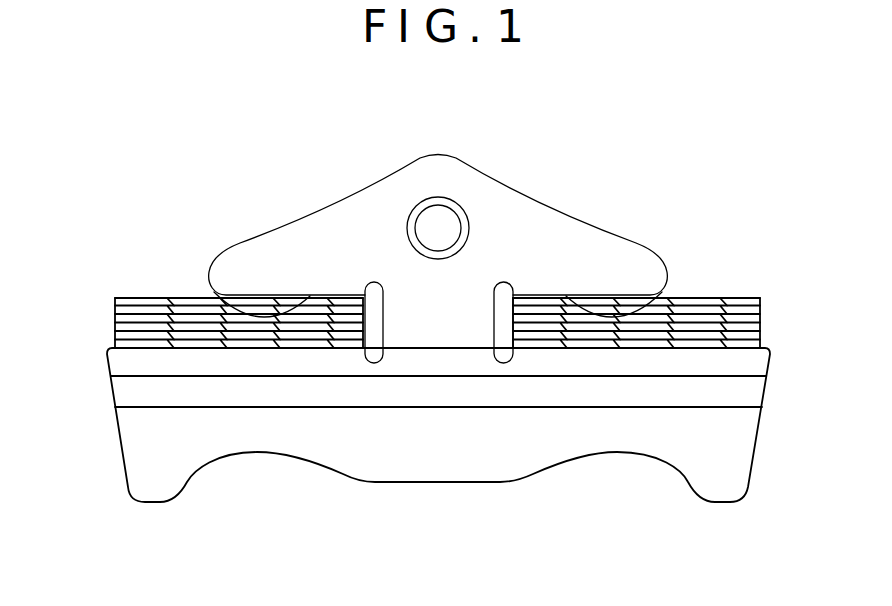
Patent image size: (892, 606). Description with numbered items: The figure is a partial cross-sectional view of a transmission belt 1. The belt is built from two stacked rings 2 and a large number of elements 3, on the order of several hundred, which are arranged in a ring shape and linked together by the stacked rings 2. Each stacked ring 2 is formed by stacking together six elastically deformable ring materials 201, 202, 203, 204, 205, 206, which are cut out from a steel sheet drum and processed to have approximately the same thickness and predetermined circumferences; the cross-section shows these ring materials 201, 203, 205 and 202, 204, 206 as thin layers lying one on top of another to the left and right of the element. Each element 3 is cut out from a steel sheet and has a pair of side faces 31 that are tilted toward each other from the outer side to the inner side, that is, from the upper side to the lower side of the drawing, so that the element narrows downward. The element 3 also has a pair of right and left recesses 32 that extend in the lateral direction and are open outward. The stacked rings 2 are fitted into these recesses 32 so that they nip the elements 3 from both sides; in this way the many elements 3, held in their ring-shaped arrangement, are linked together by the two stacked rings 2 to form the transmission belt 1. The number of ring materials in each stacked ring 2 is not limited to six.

The transmission belt 1 is at (658, 183).
The stacked ring 2 is at (742, 297).
The element 3 is at (742, 503).
The ring material 201 is at (116, 334).
The ring material 202 is at (760, 337).
The ring material 203 is at (116, 316).
The ring material 204 is at (760, 318).
The ring material 205 is at (116, 300).
The ring material 206 is at (760, 302).
The side face 31 is at (117, 420).
The recess 32 is at (222, 320).